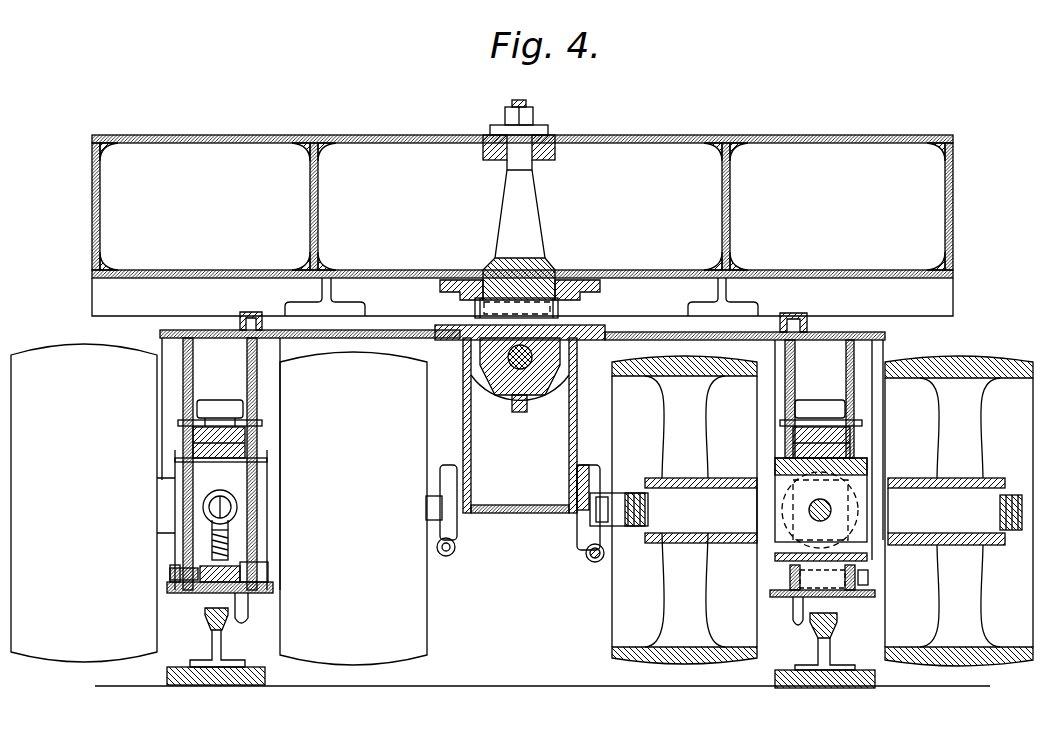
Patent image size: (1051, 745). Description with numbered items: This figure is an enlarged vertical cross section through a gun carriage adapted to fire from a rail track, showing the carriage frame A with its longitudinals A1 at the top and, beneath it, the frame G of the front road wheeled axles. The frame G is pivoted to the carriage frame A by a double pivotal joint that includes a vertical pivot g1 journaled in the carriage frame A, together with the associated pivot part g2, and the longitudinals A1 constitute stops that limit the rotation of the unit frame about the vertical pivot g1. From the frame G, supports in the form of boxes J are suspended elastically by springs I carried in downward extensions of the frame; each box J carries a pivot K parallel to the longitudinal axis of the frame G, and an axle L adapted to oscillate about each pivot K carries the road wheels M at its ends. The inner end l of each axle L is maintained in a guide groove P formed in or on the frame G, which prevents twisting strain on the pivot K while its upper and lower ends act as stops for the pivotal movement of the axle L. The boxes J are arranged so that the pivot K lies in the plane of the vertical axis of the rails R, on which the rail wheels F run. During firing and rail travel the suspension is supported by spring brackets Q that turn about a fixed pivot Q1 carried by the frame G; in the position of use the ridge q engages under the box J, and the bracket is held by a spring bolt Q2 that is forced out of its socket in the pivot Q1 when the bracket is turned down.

The carriage frame A is at (105, 225).
The longitudinals A1 is at (330, 291).
The frame of the front road wheeled axles G is at (185, 358).
The vertical pivot g1 is at (528, 215).
The pivot pin g2 is at (487, 298).
The springs I is at (216, 430).
The boxes J is at (245, 470).
The pivot K is at (230, 507).
The ridge q is at (235, 532).
The spring brackets Q is at (240, 548).
The fixed pivot Q1 is at (245, 576).
The spring bolt Q2 is at (185, 578).
The inner end of the axle l is at (428, 506).
The guide groove P is at (450, 494).
The axle L is at (162, 528).
The wheels F is at (244, 610).
The rails R is at (213, 637).
The road wheels M is at (405, 636).